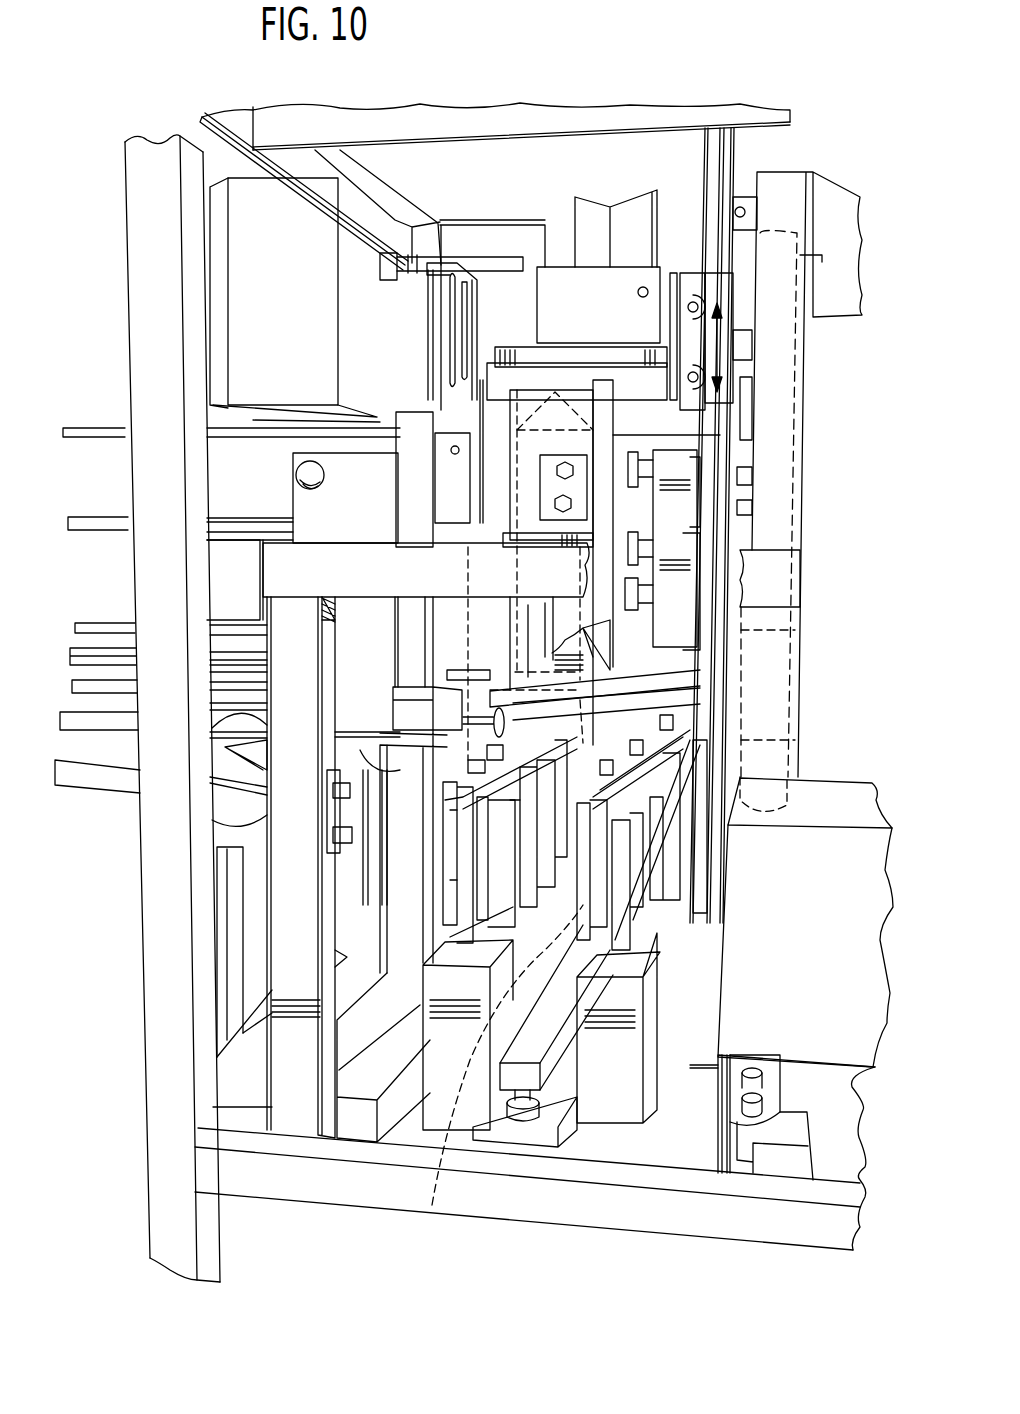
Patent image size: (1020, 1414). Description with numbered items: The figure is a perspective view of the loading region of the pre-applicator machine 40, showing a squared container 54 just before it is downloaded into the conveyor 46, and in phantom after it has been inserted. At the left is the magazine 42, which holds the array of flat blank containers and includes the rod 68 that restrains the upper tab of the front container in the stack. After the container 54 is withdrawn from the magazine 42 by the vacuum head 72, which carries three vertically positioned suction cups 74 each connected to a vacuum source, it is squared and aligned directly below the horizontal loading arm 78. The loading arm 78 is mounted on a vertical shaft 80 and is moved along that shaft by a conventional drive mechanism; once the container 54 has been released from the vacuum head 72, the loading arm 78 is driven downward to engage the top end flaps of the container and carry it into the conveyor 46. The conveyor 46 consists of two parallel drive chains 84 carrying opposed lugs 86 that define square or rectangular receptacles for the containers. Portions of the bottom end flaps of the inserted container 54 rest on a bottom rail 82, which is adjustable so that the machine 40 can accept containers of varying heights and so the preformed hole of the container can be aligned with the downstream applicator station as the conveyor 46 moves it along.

The pre-applicator machine 40 is at (163, 118).
The magazine 42 is at (107, 428).
The conveyor 46 is at (413, 912).
The container 54 is at (527, 390).
The rod 68 is at (455, 317).
The vacuum head 72 is at (688, 503).
The suction cups 74 is at (640, 447).
The loading arm 78 is at (625, 353).
The vertical shaft 80 is at (710, 520).
The bottom rail 82 is at (520, 1080).
The drive chains 84 is at (660, 932).
The lugs 86 is at (450, 937).